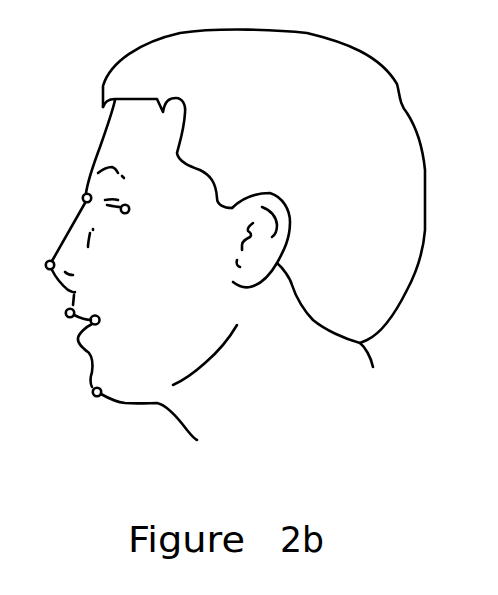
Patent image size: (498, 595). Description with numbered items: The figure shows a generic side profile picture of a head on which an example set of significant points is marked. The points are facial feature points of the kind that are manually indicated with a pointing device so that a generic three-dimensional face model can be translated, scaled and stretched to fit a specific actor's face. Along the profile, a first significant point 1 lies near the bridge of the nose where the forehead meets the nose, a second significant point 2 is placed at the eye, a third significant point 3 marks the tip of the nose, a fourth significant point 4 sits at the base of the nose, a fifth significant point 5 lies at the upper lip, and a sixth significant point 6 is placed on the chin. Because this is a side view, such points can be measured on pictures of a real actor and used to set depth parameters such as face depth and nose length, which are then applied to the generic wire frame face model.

The significant point 1 is at (75, 190).
The significant point 2 is at (137, 209).
The significant point 3 is at (41, 266).
The significant point 4 is at (57, 313).
The significant point 5 is at (107, 321).
The significant point 6 is at (86, 399).